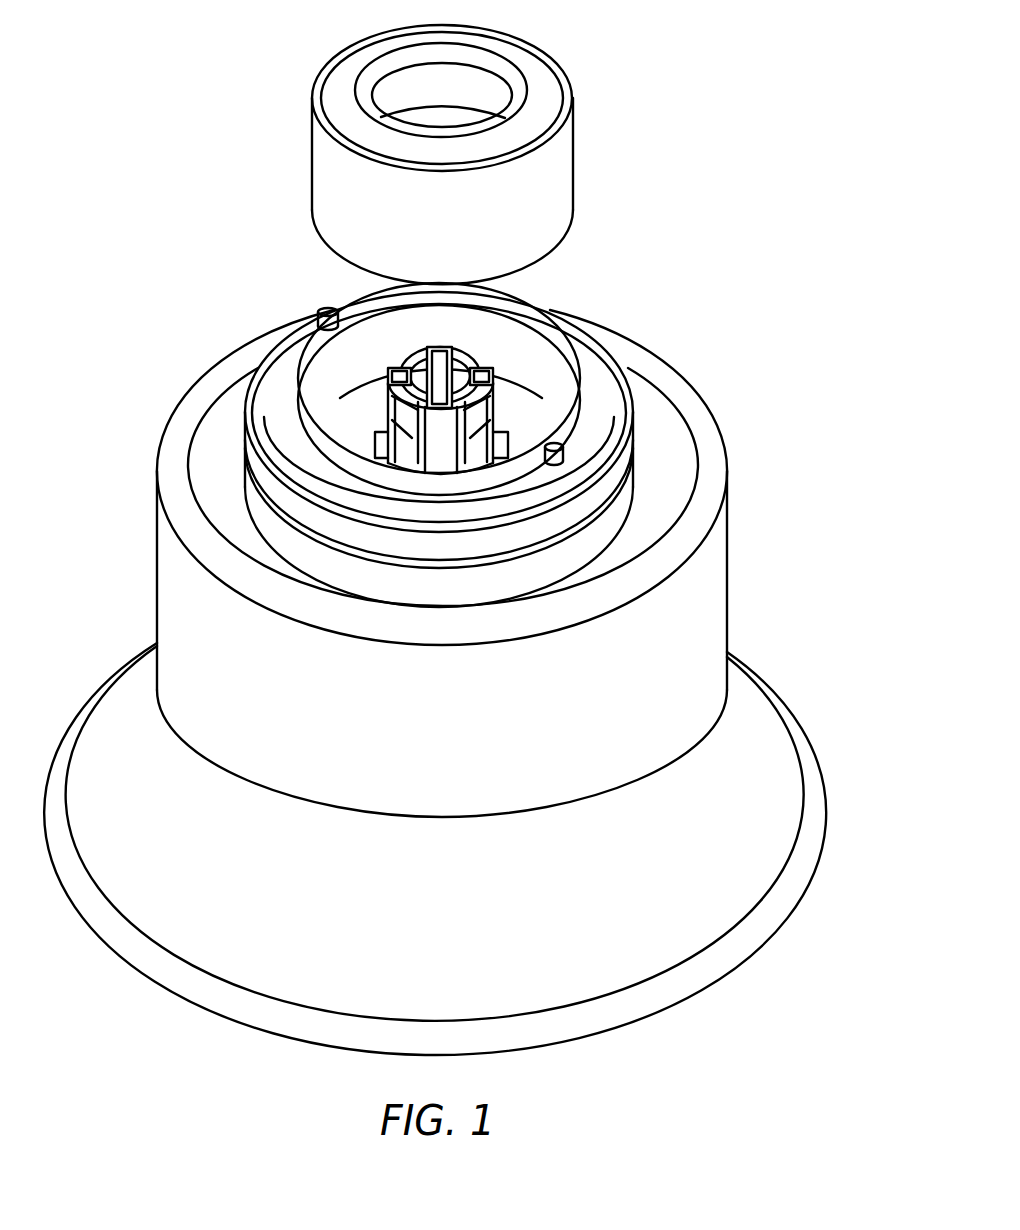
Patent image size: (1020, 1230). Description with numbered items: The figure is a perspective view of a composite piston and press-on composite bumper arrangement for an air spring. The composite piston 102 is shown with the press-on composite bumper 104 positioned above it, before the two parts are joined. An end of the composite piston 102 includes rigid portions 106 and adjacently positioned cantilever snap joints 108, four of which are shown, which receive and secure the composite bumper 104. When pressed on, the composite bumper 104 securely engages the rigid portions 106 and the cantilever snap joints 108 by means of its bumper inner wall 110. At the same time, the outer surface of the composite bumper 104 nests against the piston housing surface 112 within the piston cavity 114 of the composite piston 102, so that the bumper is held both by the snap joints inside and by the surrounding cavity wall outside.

The composite piston 102 is at (428, 788).
The press-on composite bumper 104 is at (460, 151).
The rigid portions 106 is at (440, 447).
The cantilever snap joints 108 is at (365, 495).
The bumper inner wall 110 is at (422, 130).
The piston housing surface 112 is at (453, 327).
The piston cavity 114 is at (320, 387).